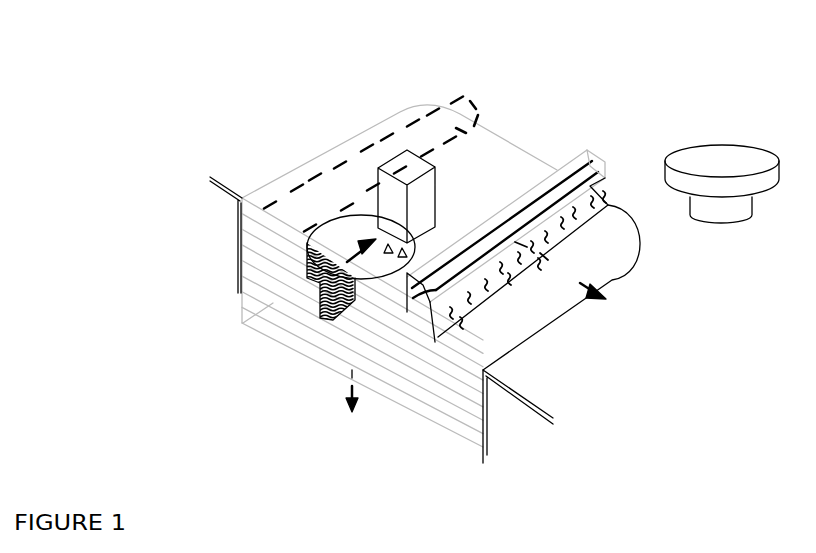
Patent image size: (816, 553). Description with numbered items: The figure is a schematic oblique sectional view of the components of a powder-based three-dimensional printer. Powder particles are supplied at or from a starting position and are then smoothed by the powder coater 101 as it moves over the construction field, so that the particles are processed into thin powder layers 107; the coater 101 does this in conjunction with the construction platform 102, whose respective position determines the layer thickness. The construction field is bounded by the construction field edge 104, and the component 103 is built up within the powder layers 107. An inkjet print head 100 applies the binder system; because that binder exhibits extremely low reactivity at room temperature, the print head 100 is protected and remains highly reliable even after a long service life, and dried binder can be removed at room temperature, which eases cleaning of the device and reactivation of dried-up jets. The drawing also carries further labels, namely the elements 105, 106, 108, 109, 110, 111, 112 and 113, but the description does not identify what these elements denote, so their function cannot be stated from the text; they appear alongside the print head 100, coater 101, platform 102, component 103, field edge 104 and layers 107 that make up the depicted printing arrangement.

The inkjet print head 100 is at (423, 212).
The powder coater 101 is at (543, 200).
The construction platform 102 is at (292, 308).
The component 103 is at (335, 242).
The construction field edge 104 is at (240, 250).
The hidden channel 105 is at (388, 132).
The sloped discharge surface 106 is at (560, 267).
The powder layers 107 is at (470, 393).
The downward flow direction 108 is at (350, 388).
The droplets 109 is at (397, 258).
The fibers 110 is at (587, 197).
The housing top surface 111 is at (340, 140).
The trough end wall 112 is at (420, 318).
The trough outlet 113 is at (413, 307).